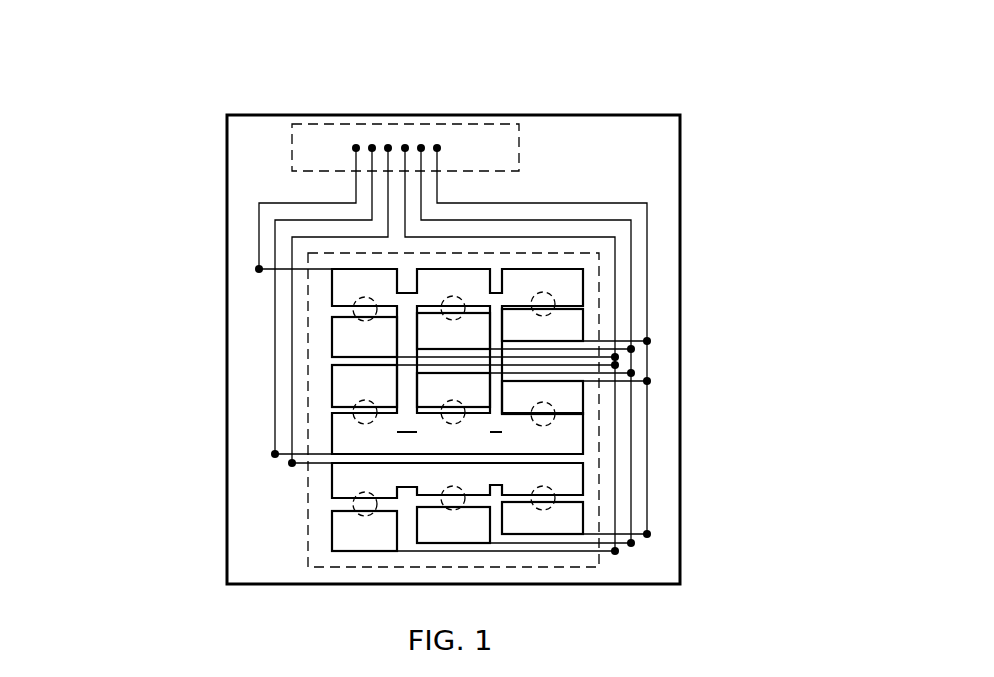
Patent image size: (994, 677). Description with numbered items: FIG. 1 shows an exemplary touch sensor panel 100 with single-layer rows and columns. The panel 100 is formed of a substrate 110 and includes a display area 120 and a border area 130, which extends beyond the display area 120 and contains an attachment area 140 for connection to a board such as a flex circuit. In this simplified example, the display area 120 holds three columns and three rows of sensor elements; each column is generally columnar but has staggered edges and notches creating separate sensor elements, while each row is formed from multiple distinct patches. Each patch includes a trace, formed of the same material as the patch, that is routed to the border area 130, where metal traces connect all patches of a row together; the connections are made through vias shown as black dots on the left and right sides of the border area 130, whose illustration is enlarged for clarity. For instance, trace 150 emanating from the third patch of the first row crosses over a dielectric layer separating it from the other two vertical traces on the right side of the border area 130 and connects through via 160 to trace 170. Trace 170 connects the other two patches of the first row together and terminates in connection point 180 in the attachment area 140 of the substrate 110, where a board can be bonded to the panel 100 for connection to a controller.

The panel 100 is at (268, 58).
The substrate 110 is at (680, 130).
The display area 120 is at (308, 518).
The border area 130 is at (259, 390).
The attachment area 140 is at (292, 163).
The trace 150 is at (640, 540).
The via 160 is at (650, 531).
The trace 170 is at (647, 228).
The connection point 180 is at (437, 148).